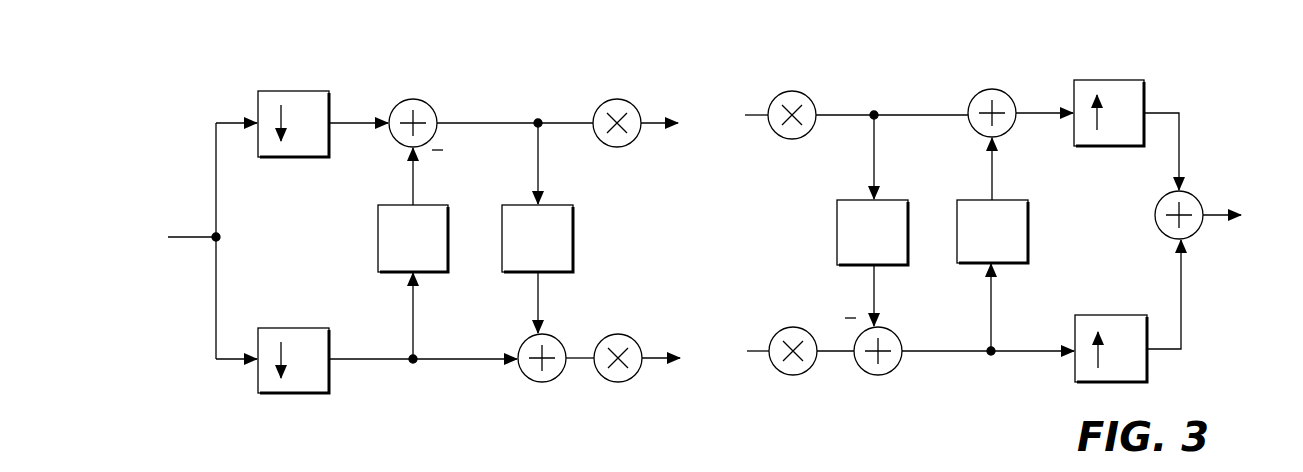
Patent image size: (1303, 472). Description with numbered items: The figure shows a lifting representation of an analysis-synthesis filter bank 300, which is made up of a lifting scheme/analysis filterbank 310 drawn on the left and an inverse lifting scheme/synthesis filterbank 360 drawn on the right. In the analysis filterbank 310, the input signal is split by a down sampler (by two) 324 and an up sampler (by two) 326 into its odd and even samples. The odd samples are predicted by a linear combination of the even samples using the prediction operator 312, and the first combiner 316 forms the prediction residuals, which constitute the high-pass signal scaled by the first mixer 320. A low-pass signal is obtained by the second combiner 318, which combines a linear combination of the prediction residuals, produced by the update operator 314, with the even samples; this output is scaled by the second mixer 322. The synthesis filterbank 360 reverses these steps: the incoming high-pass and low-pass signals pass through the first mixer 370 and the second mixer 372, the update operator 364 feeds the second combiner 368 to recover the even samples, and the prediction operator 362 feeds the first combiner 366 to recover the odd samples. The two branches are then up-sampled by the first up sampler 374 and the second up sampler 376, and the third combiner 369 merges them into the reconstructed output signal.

The analysis-synthesis filter bank 300 is at (1152, 50).
The lifting scheme/analysis filterbank 310 is at (652, 94).
The prediction operator 312 is at (378, 238).
The update operator 314 is at (573, 238).
The first combiner 316 is at (430, 105).
The second combiner 318 is at (530, 379).
The first mixer 320 is at (597, 107).
The second mixer 322 is at (620, 382).
The down sampler (by 2) 324 is at (296, 91).
The up sampler (by 2) 326 is at (258, 393).
The inverse lifting scheme/synthesis filterbank 360 is at (751, 96).
The prediction operator 362 is at (1028, 232).
The update operator 364 is at (837, 230).
The first combiner 366 is at (977, 95).
The second combiner 368 is at (895, 372).
The third combiner 369 is at (1197, 238).
The first mixer 370 is at (807, 95).
The second mixer 372 is at (788, 377).
The first up sampler 374 is at (1144, 90).
The second up sampler 376 is at (1145, 382).